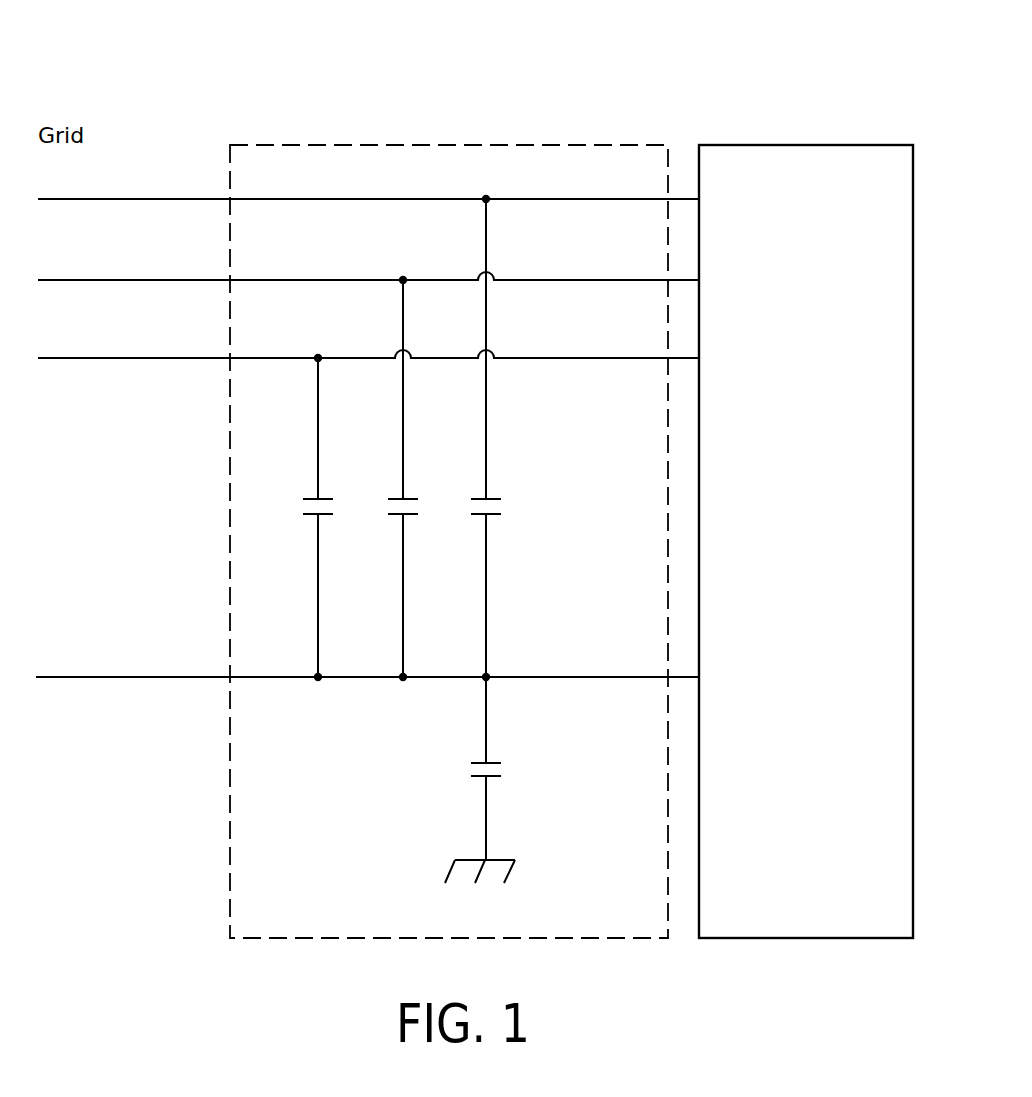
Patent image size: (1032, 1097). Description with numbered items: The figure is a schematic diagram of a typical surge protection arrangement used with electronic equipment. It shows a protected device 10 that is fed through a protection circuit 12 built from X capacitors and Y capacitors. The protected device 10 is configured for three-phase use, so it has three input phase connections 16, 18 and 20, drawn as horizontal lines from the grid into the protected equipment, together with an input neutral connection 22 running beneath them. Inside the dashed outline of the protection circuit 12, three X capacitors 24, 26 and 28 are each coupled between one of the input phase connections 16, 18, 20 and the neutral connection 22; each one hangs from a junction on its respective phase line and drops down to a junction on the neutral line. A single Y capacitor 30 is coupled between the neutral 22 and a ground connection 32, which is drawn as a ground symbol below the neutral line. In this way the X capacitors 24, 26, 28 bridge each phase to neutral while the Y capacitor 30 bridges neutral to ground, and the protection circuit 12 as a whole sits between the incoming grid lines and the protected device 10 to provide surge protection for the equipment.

The protected device 10 is at (788, 107).
The protection circuit 12 is at (467, 127).
The input phase connection 16 is at (128, 198).
The input phase connection 18 is at (128, 279).
The input phase connection 20 is at (125, 357).
The input neutral connection 22 is at (124, 676).
The X capacitor 24 is at (323, 498).
The X capacitor 26 is at (408, 498).
The X capacitor 28 is at (491, 498).
The Y capacitor 30 is at (492, 761).
The ground connection 32 is at (507, 858).